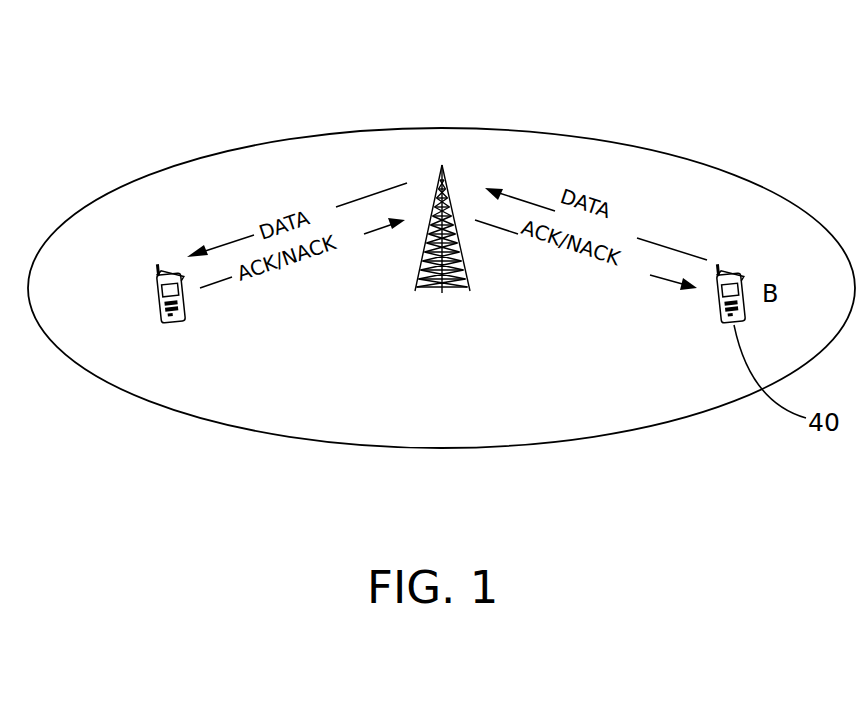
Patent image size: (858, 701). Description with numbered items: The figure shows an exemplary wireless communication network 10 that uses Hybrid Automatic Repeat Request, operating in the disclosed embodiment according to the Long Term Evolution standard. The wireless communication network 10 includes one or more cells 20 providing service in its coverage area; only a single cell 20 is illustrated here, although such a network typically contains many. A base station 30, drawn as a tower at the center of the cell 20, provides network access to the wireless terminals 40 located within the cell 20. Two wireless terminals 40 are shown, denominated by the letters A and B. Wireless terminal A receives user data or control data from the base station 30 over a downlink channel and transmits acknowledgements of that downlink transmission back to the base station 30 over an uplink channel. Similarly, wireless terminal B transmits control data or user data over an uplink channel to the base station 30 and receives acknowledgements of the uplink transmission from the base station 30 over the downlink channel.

The wireless communication network 10 is at (730, 117).
The cell 20 is at (153, 171).
The base station 30 is at (444, 166).
The wireless terminal 40 is at (170, 325).